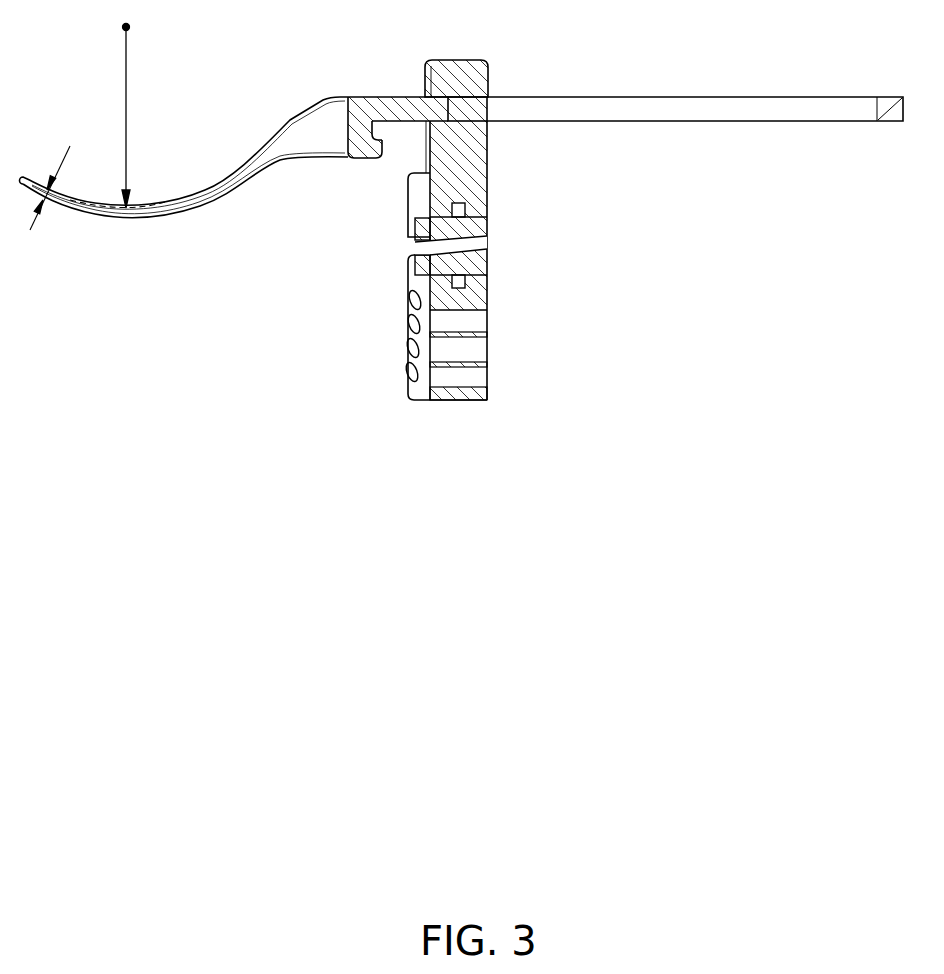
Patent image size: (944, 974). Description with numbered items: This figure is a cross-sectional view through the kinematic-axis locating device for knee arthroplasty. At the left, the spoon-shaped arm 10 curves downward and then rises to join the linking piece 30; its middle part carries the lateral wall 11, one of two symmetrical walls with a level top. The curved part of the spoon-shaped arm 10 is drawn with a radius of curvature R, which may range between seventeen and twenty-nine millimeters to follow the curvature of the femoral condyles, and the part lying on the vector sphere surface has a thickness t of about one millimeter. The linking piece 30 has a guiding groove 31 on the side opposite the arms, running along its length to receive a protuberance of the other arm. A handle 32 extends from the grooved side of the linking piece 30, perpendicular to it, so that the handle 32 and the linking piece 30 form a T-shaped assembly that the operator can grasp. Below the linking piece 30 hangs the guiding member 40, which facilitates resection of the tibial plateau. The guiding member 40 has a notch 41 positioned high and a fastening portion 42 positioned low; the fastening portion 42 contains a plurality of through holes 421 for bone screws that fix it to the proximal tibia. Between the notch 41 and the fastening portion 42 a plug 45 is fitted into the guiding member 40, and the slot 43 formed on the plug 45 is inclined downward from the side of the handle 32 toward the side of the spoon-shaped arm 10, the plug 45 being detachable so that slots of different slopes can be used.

The spoon-shaped arm 10 is at (227, 183).
The lateral wall 11 is at (160, 200).
The linking piece 30 is at (360, 150).
The guiding groove 31 is at (377, 128).
The handle 32 is at (748, 105).
The guiding member 40 is at (488, 173).
The notch 41 is at (448, 98).
The fastening portion 42 is at (480, 305).
The through hole 421 is at (477, 350).
The slot 43 is at (442, 249).
The plug 45 is at (480, 230).
The radius of curvature R is at (127, 85).
The thickness t is at (63, 156).